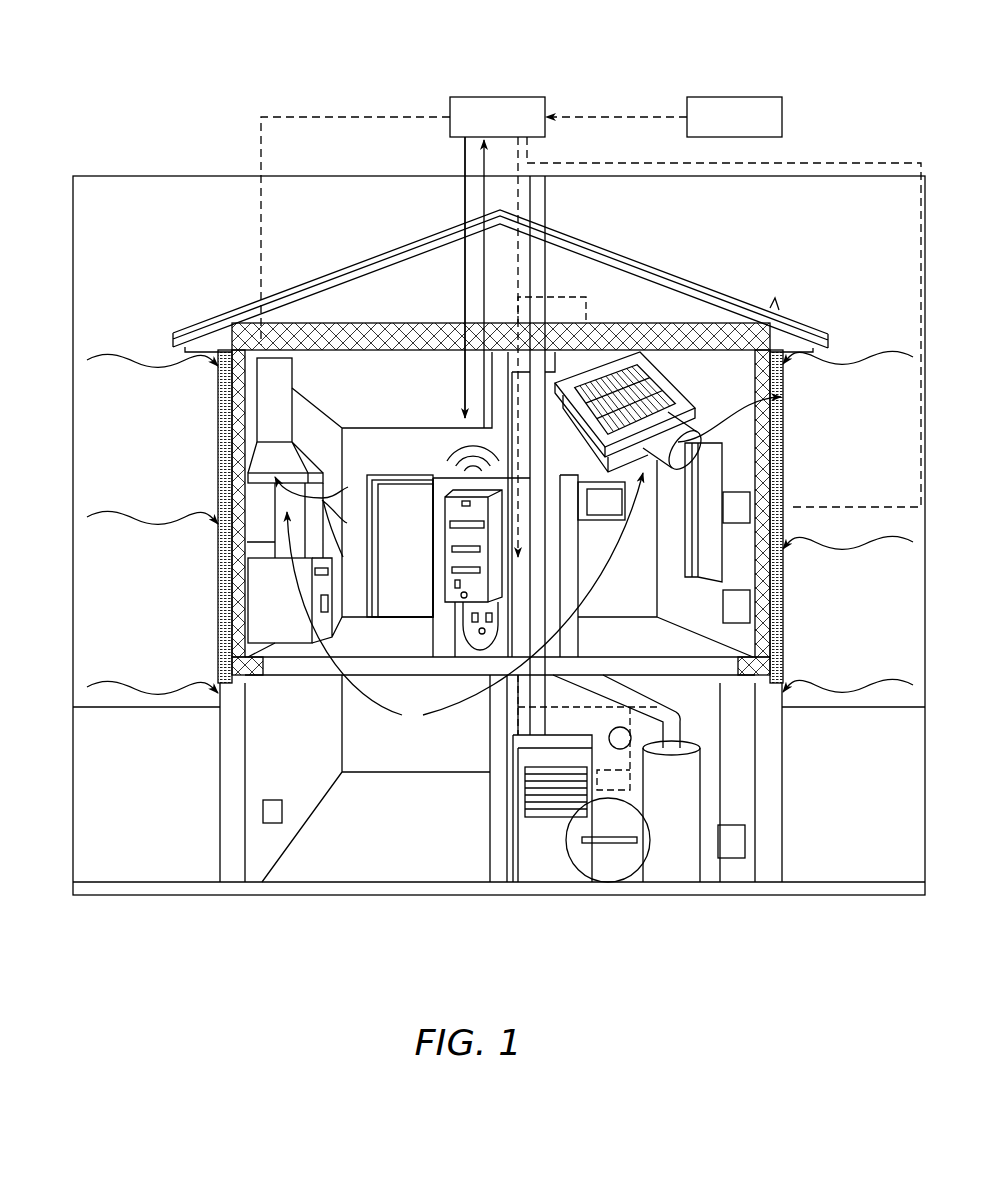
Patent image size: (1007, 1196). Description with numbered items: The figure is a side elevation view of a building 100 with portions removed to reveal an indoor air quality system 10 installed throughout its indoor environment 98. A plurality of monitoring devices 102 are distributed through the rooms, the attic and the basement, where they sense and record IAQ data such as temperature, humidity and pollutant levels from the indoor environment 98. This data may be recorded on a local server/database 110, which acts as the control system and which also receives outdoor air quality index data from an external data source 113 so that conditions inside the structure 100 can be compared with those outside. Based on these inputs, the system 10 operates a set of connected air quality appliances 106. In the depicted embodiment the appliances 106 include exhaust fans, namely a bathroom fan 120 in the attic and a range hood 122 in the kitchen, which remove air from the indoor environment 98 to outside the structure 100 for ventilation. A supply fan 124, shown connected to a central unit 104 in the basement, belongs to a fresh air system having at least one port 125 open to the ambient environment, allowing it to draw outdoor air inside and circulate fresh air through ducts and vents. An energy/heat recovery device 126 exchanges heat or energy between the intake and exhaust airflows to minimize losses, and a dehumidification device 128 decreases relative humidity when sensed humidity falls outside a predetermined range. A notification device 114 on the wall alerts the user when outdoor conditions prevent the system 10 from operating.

The indoor air quality system 10 is at (692, 60).
The indoor environment 98 is at (610, 297).
The building 100 is at (593, 243).
The monitoring devices 102 is at (438, 547).
The central unit 104 is at (513, 810).
The air quality appliances 106 is at (497, 720).
The local server/database 110 is at (495, 97).
The external data source 113 is at (782, 117).
The notification device 114 is at (755, 517).
The bathroom fan 120 is at (690, 388).
The range hood 122 is at (250, 453).
The supply fan 124 is at (547, 817).
The port 125 is at (633, 731).
The energy/heat recovery device 126 is at (745, 842).
The dehumidification device 128 is at (705, 805).